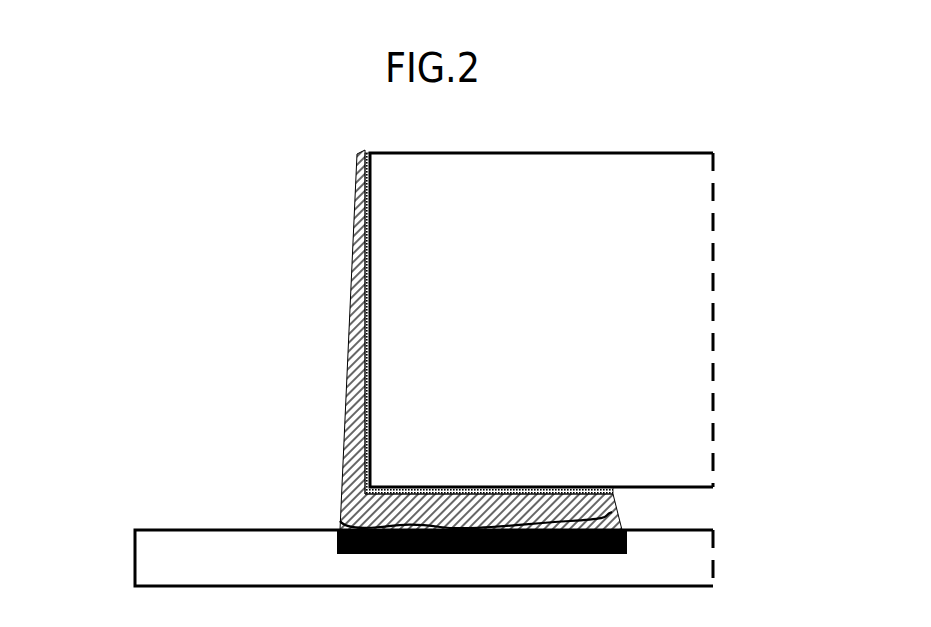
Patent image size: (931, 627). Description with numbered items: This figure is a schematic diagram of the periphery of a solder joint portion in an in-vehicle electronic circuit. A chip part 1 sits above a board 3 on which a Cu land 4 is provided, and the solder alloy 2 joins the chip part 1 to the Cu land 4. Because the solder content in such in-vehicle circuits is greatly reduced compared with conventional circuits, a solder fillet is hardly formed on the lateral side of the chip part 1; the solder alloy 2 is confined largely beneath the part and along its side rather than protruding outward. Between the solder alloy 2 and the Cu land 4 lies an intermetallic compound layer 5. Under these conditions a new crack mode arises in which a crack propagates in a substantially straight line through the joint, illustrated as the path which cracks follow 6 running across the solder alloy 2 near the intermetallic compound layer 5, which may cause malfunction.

The chip part 1 is at (540, 215).
The solder alloy 2 is at (347, 457).
The board 3 is at (202, 563).
The Cu land 4 is at (340, 541).
The intermetallic compound layer 5 is at (349, 329).
The path which cracks follow 6 is at (380, 527).